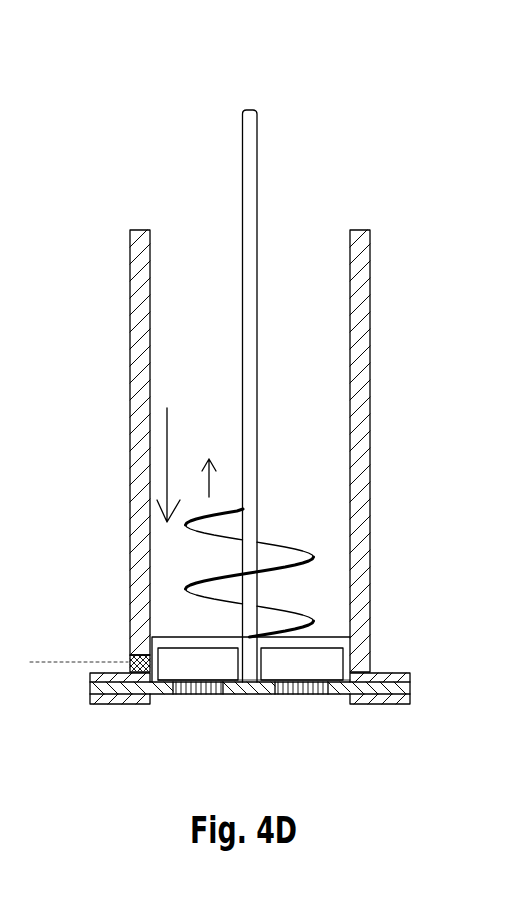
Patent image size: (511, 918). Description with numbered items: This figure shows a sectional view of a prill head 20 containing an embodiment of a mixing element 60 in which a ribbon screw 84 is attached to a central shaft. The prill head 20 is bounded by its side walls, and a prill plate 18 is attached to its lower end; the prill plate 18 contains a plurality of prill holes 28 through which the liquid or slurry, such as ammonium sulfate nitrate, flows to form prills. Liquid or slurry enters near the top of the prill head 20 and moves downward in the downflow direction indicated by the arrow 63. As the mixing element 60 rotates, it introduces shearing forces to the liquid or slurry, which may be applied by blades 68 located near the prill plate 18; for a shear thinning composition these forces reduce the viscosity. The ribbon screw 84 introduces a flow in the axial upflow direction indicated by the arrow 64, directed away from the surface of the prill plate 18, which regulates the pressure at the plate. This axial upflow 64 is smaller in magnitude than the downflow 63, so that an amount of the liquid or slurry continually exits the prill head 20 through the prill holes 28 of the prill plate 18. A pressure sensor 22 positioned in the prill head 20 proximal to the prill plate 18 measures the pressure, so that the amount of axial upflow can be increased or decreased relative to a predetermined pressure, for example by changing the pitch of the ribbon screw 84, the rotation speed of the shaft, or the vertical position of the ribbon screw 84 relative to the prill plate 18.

The mixing element 60 is at (183, 131).
The prill head 20 is at (374, 352).
The pressure sensor 22 is at (130, 662).
The prill plate 18 is at (185, 695).
The prill holes 28 is at (323, 695).
The blades 68 is at (335, 662).
The ribbon screw 84 is at (287, 540).
The downflow direction arrow 63 is at (168, 472).
The axial upflow direction arrow 64 is at (210, 478).